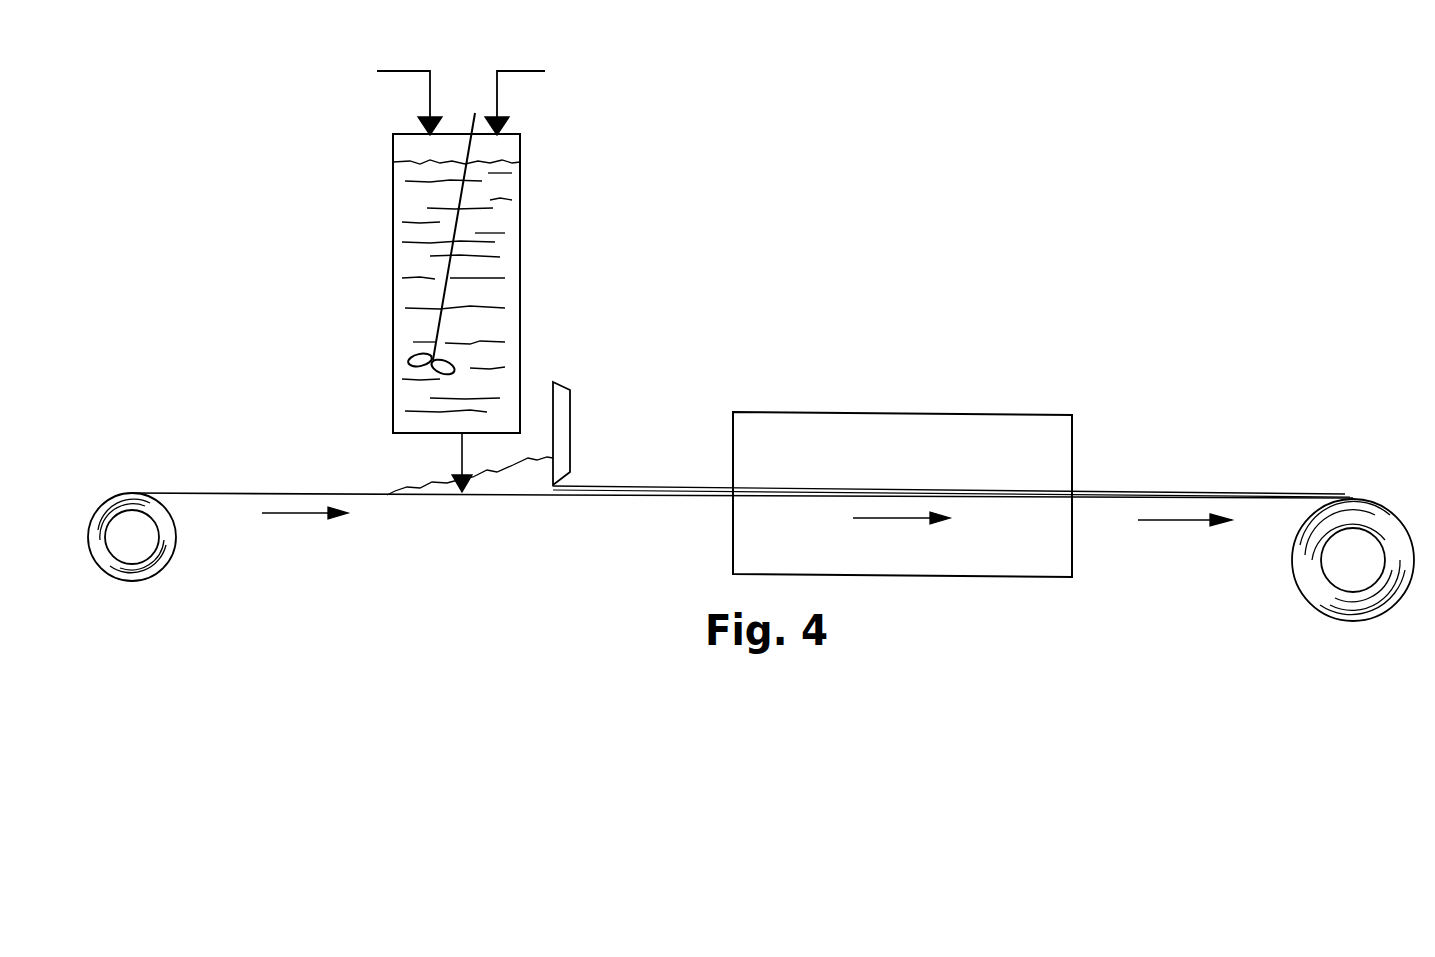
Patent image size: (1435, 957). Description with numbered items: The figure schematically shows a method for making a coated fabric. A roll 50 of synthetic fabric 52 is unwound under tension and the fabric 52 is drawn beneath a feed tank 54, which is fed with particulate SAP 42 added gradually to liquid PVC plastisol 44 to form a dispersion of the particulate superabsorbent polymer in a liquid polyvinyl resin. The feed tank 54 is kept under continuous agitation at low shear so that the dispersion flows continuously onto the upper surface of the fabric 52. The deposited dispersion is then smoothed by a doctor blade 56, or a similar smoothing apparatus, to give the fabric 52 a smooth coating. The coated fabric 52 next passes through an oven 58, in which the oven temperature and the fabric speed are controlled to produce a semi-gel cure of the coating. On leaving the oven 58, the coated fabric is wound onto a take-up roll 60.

The particulate SAP 42 is at (430, 71).
The liquid PVC plastisol 44 is at (497, 71).
The roll of synthetic fabric 50 is at (132, 492).
The synthetic fabric 52 is at (227, 493).
The feed tank 54 is at (520, 262).
The doctor blade 56 is at (572, 423).
The oven 58 is at (960, 412).
The take-up roll 60 is at (1372, 498).